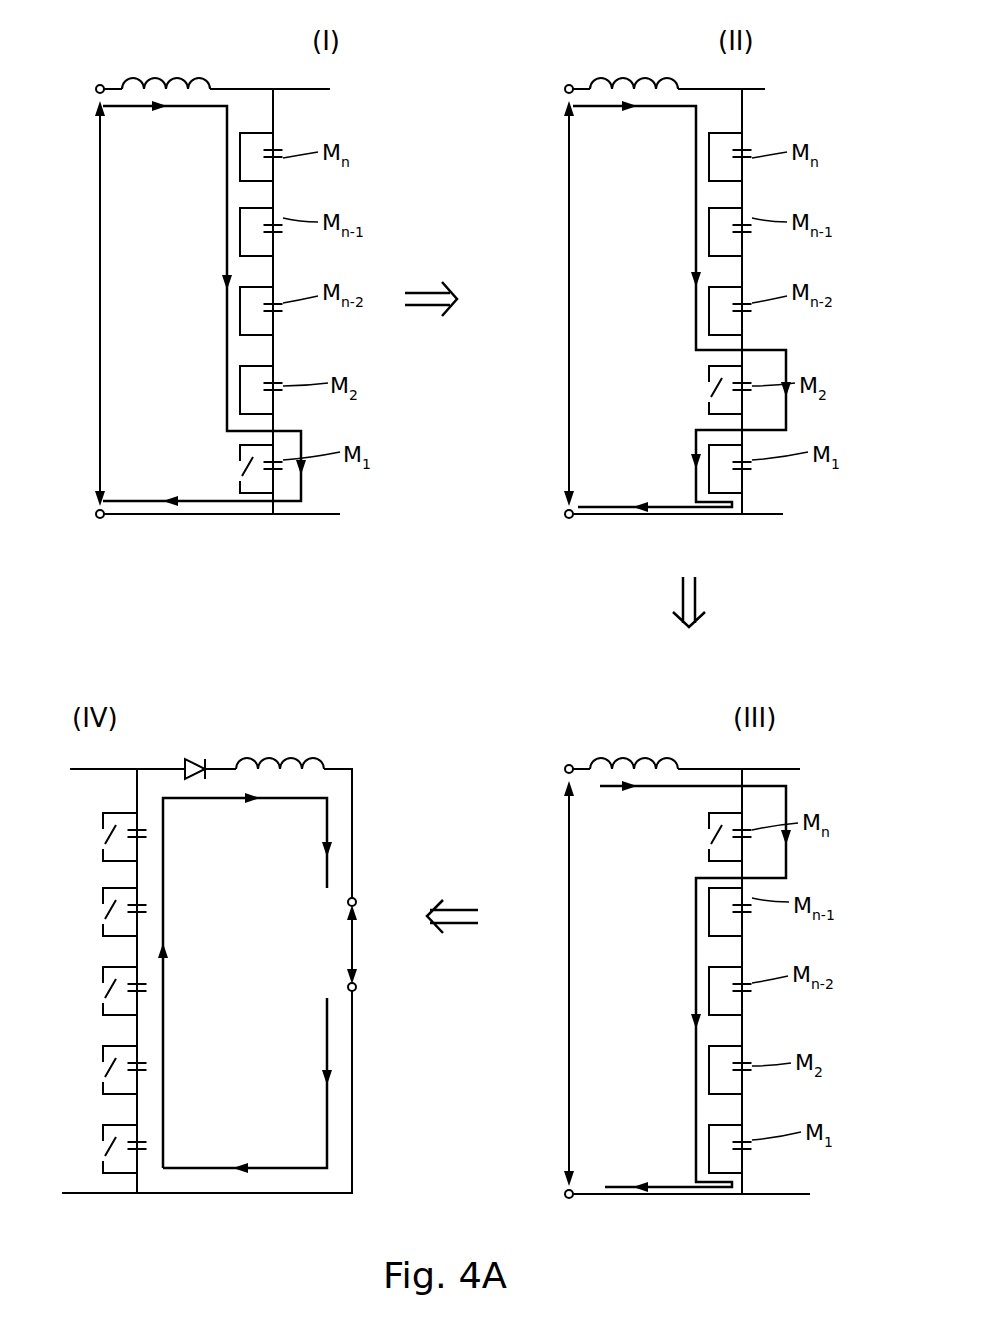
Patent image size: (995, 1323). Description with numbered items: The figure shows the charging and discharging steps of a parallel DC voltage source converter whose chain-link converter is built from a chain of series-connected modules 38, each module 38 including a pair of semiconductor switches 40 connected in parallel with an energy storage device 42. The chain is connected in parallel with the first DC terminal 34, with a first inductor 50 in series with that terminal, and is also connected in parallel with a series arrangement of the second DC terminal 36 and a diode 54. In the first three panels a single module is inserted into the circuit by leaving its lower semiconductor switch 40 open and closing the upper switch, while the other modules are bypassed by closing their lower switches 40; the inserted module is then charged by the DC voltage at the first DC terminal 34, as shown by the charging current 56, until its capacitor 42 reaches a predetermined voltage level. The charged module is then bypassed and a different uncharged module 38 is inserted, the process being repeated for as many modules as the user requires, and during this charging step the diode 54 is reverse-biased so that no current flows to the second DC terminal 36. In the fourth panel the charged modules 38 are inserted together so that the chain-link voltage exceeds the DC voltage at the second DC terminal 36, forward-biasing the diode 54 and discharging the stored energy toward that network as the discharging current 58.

The first DC terminal 34 is at (541, 983).
The second DC terminal 36 is at (382, 940).
The module 38 is at (94, 1125).
The semiconductor switch 40 is at (100, 1143).
The energy storage device 42 is at (142, 1157).
The first inductor 50 is at (283, 757).
The diode 54 is at (196, 757).
The charging current 56 is at (696, 955).
The discharging current 58 is at (167, 942).